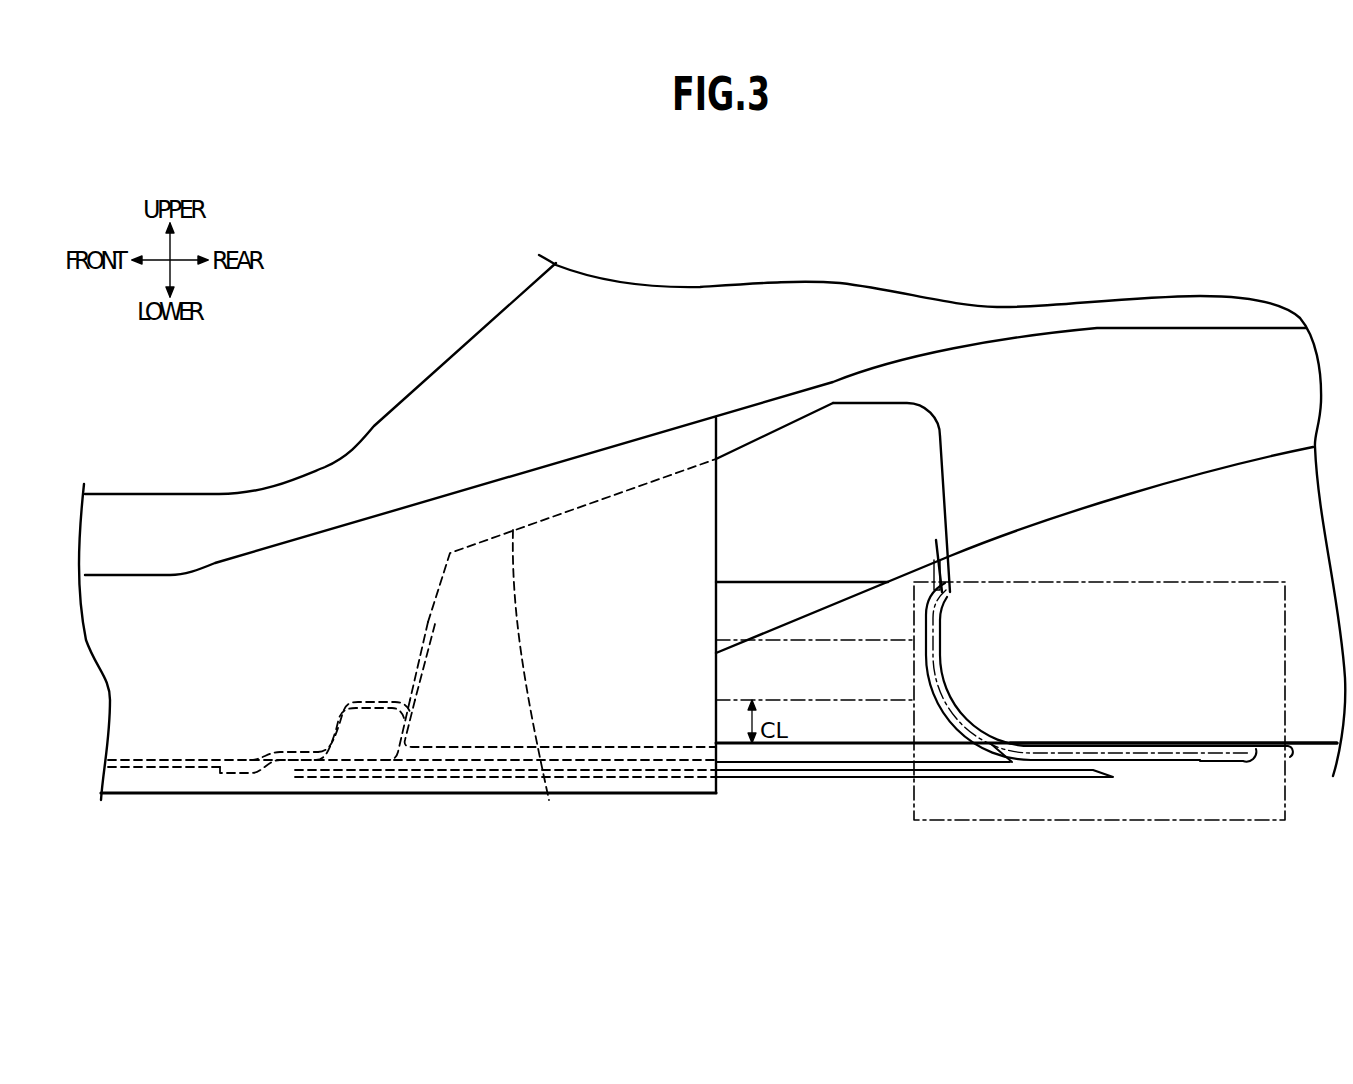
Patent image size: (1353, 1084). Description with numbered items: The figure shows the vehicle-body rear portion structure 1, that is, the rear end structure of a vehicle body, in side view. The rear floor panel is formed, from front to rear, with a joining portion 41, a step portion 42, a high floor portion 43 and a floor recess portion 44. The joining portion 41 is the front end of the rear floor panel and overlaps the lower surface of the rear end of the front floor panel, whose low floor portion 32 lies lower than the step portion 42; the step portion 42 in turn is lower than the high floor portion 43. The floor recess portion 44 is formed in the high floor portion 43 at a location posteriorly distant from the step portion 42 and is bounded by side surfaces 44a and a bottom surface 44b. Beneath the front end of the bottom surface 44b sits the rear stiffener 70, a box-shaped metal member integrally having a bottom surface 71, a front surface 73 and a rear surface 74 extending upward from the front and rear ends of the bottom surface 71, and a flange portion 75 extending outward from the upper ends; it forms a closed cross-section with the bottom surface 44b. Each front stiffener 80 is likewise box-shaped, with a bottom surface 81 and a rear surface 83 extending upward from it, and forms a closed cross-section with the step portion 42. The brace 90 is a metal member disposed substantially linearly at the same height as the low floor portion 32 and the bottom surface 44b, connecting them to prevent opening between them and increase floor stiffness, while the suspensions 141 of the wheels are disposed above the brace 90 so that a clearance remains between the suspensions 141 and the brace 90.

The vehicle-body rear portion structure 1 is at (356, 417).
The low floor portion 32 is at (155, 767).
The joining portion 41 is at (244, 770).
The step portion 42 is at (365, 710).
The high floor portion 43 is at (549, 800).
The floor recess portion 44 is at (1088, 671).
The side surfaces 44a is at (950, 619).
The bottom surface 44b is at (1112, 743).
The rear stiffener 70 is at (1026, 817).
The bottom surface 71 is at (1138, 763).
The front surface 73 is at (952, 707).
The rear surface 74 is at (1252, 752).
The flange portion 75 is at (1246, 816).
The front stiffener 80 is at (545, 760).
The bottom surface 81 is at (375, 755).
The rear surface 83 is at (414, 718).
The brace 90 is at (822, 781).
The suspensions 141 is at (1131, 582).